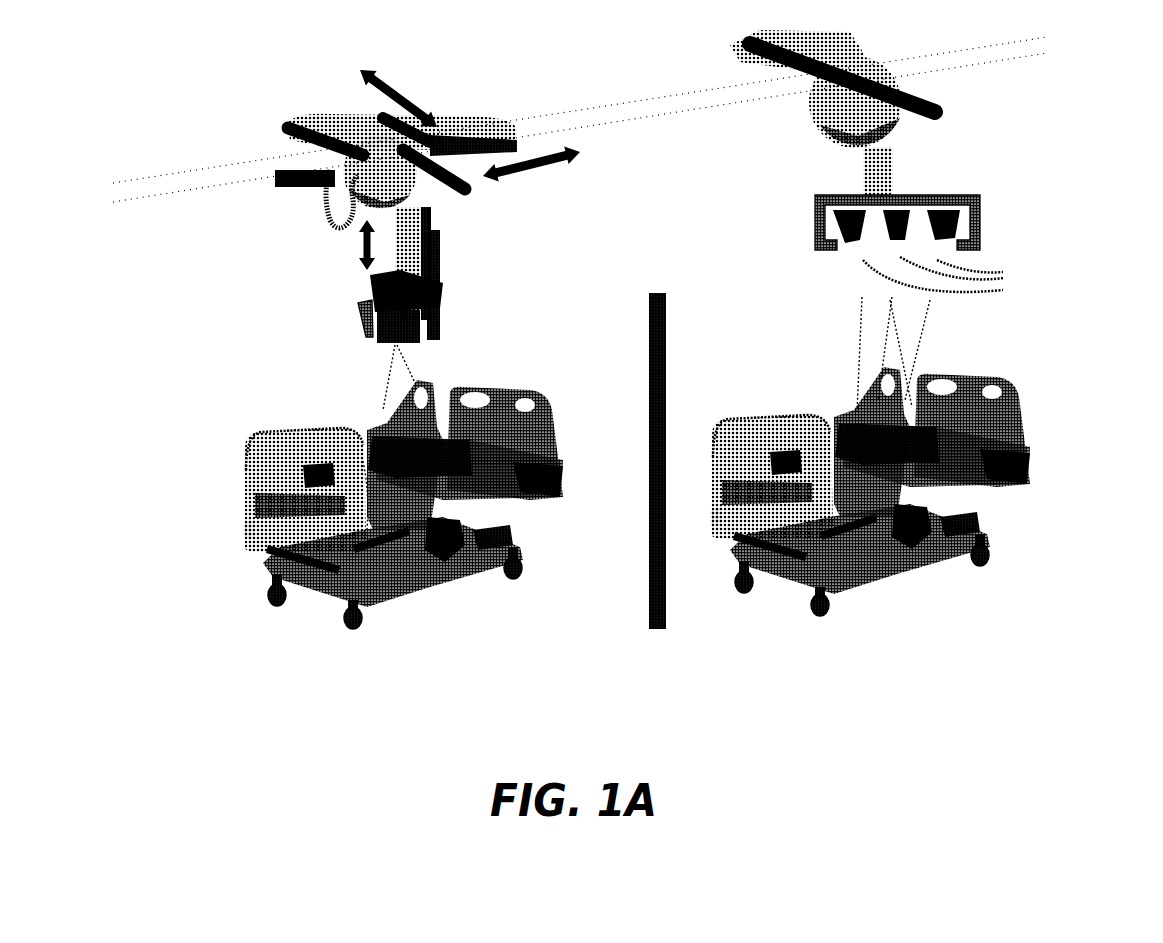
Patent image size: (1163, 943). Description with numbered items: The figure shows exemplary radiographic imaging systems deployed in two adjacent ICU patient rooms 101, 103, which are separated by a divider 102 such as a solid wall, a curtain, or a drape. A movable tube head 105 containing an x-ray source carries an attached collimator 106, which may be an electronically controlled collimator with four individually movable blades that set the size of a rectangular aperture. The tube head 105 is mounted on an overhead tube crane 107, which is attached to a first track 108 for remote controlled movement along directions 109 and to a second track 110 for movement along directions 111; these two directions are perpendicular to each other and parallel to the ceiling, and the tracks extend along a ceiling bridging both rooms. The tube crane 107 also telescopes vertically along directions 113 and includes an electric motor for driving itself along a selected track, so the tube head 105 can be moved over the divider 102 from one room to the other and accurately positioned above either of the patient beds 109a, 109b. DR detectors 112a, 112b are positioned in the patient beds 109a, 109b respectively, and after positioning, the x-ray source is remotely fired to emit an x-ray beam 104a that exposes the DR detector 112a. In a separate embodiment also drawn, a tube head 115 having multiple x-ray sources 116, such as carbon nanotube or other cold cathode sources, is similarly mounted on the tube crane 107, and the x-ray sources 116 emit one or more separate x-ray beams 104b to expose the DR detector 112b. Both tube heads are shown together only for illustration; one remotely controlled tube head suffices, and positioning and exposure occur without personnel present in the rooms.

The ICU patient room 101 is at (178, 400).
The divider 102 is at (665, 292).
The ICU patient room 103 is at (1147, 315).
The x-ray beam 104a is at (380, 405).
The x-ray beams 104b is at (850, 350).
The tube head 105 is at (325, 322).
The collimator 106 is at (405, 343).
The overhead tube crane 107 is at (462, 212).
The first track 108 is at (312, 115).
The directions 109 is at (395, 78).
The patient bed 109a is at (232, 500).
The patient bed 109b is at (1055, 432).
The second track 110 is at (133, 178).
The directions 111 is at (540, 172).
The DR detector 112a is at (443, 463).
The DR detector 112b is at (918, 475).
The directions 113 is at (355, 243).
The tube head 115 is at (997, 205).
The x-ray sources 116 is at (954, 277).